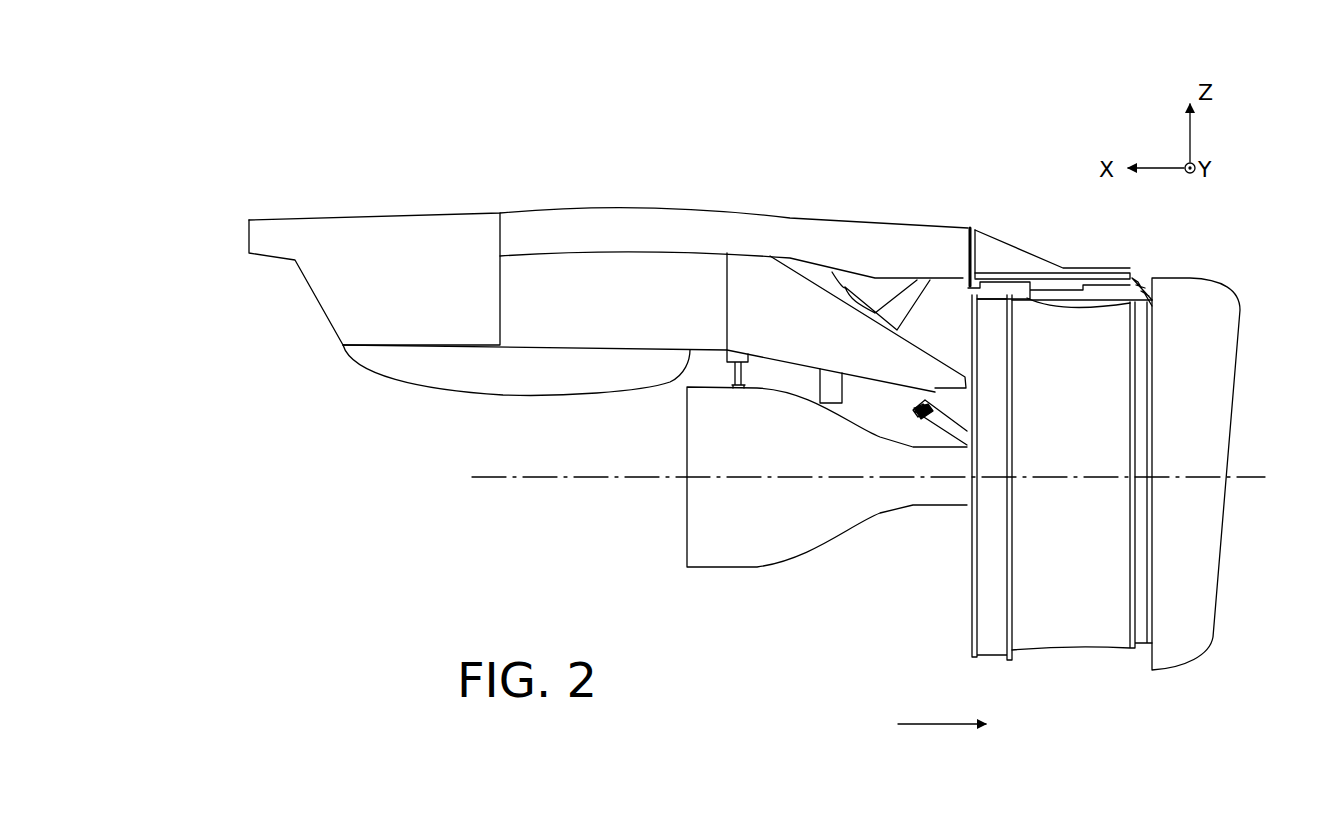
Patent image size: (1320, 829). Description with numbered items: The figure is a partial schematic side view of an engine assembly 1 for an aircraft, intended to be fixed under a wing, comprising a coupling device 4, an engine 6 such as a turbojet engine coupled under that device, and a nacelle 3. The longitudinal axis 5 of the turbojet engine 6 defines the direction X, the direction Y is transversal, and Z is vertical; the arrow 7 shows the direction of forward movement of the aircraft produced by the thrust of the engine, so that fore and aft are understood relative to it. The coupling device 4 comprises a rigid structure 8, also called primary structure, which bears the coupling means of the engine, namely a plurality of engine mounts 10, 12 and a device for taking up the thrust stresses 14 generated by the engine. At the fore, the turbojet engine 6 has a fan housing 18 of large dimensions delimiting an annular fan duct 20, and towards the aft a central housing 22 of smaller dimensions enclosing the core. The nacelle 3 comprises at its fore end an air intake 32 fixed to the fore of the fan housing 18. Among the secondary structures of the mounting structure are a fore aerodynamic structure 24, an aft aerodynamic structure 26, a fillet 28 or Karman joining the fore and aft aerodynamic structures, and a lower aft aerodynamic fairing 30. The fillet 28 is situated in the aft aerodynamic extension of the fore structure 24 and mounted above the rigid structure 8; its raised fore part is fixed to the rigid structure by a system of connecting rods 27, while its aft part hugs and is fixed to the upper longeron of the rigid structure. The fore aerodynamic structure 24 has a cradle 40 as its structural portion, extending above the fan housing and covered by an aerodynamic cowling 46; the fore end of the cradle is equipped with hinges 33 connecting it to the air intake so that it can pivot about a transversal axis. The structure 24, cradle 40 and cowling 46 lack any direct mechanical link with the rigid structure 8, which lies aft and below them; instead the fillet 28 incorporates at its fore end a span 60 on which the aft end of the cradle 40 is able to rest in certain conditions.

The engine assembly 1 is at (418, 468).
The nacelle 3 is at (1210, 441).
The coupling device 4 is at (690, 189).
The longitudinal axis 5 is at (548, 478).
The engine 6 is at (918, 572).
The arrow 7 is at (940, 726).
The rigid structure 8 is at (743, 303).
The engine mount 10 is at (950, 407).
The engine mount 12 is at (738, 388).
The device for taking up thrust stresses 14 is at (937, 423).
The fan housing 18 is at (1080, 632).
The annular fan duct 20 is at (1000, 622).
The central housing 22 is at (773, 538).
The fore aerodynamic structure 24 is at (1012, 234).
The aft aerodynamic structure 26 is at (408, 228).
The connecting rods 27 is at (905, 287).
The fillet 28 is at (812, 237).
The lower aft aerodynamic fairing 30 is at (517, 385).
The air intake 32 is at (1228, 320).
The hinges 33 is at (1140, 280).
The cradle 40 is at (1105, 280).
The aerodynamic cowling 46 is at (1080, 240).
The span 60 is at (977, 277).